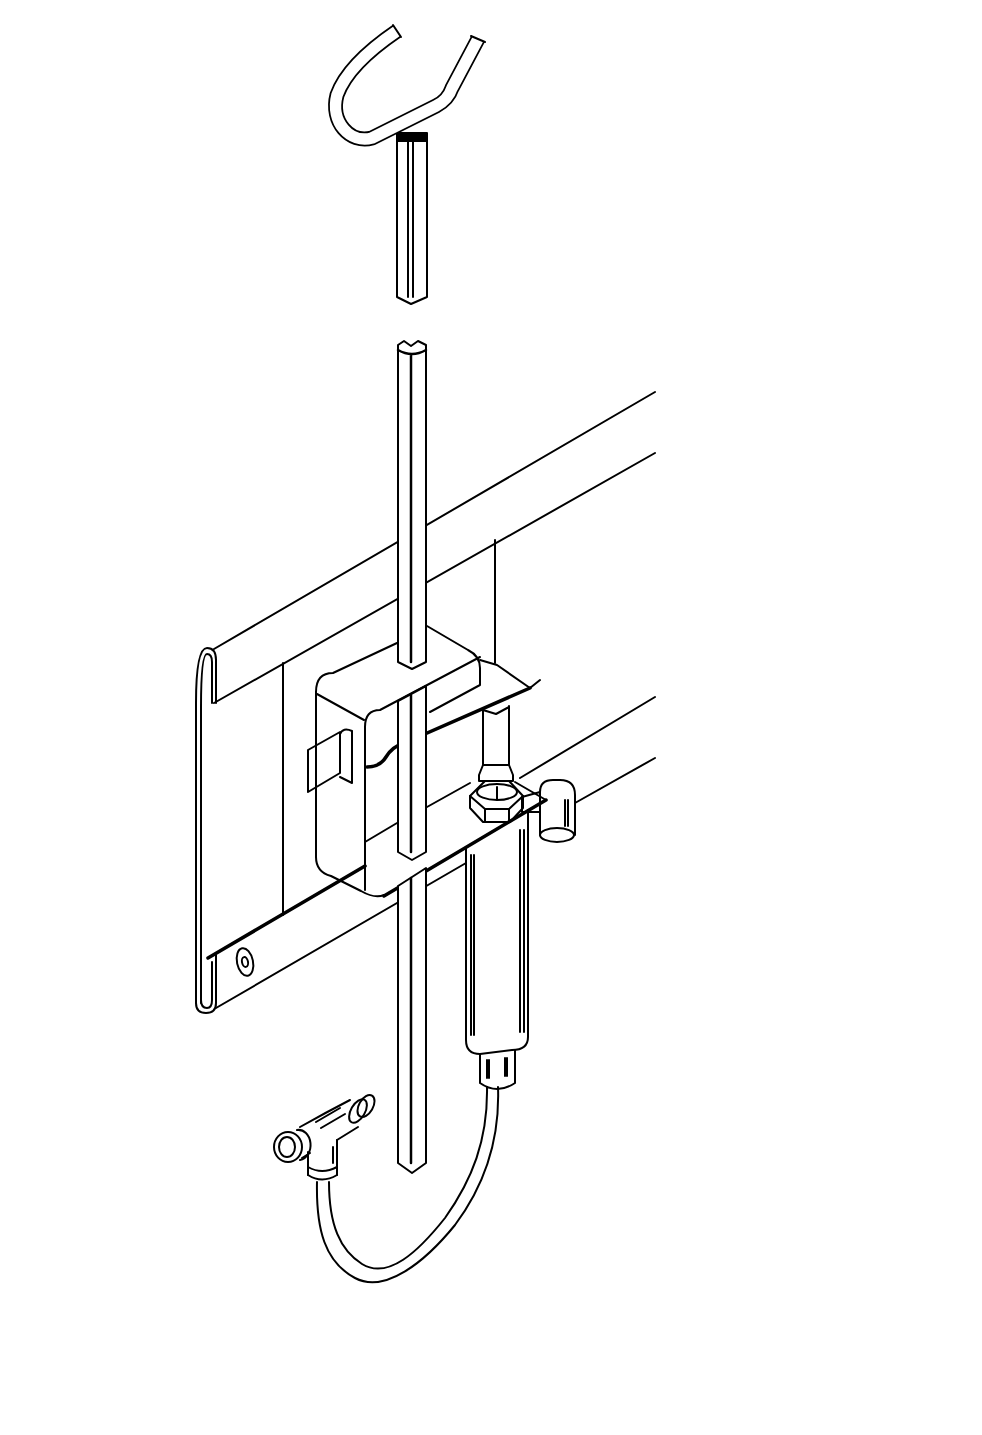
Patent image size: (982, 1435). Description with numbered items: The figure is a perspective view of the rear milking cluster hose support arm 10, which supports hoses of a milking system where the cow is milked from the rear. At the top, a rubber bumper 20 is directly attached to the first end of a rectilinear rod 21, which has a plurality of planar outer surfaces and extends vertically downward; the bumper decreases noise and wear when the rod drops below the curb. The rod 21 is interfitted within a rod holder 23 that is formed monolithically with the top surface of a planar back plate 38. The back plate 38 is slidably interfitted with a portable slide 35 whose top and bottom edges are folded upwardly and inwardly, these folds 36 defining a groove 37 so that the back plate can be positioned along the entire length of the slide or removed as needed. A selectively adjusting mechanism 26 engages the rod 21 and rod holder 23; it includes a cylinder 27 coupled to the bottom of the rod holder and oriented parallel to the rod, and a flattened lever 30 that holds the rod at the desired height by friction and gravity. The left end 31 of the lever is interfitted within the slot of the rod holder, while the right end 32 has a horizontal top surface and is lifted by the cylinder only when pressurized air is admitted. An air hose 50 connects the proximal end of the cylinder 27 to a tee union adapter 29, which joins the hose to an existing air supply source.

The rear milking cluster hose support arm 10 is at (163, 406).
The rubber bumper 20 is at (433, 133).
The rectilinear rod 21 is at (423, 380).
The rod holder 23 is at (445, 650).
The selectively adjusting mechanism 26 is at (550, 687).
The cylinder 27 is at (508, 949).
The tee union adapter 29 is at (323, 1133).
The flattened lever 30 is at (548, 670).
The left end of the lever 31 is at (326, 763).
The right end of the lever 32 is at (500, 685).
The portable slide 35 is at (220, 772).
The folds 36 is at (213, 650).
The groove 37 is at (205, 685).
The planar back plate 38 is at (295, 872).
The air hose 50 is at (478, 1175).